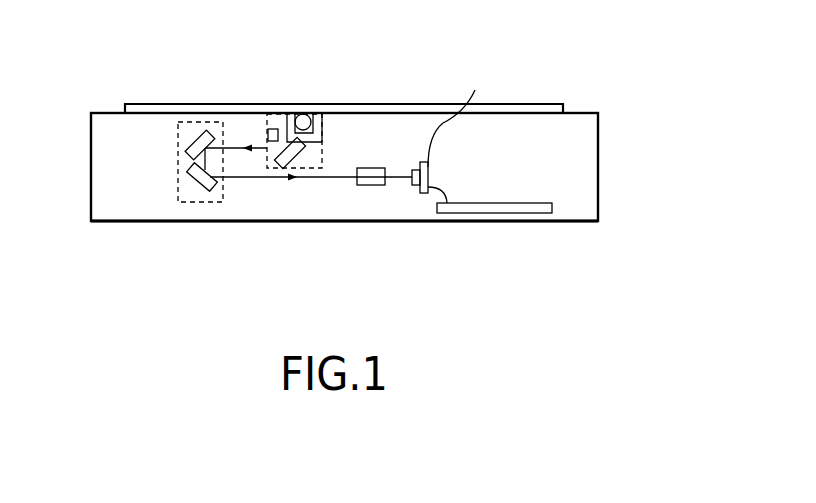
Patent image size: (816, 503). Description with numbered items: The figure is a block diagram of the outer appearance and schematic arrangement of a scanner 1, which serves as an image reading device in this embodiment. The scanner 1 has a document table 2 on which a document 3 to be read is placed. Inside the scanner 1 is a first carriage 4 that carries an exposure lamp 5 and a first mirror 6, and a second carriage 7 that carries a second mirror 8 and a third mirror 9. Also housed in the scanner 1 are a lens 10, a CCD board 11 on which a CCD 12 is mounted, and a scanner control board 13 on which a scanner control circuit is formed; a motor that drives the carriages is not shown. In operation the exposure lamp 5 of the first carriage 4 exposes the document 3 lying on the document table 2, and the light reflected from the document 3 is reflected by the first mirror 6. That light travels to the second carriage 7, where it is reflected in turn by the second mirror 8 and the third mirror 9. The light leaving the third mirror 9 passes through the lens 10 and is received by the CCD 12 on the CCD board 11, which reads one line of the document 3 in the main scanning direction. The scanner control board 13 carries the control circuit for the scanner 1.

The scanner 1 is at (361, 157).
The document table 2 is at (102, 112).
The document 3 is at (183, 105).
The first carriage 4 is at (273, 128).
The exposure lamp 5 is at (303, 114).
The first mirror 6 is at (307, 153).
The second carriage 7 is at (203, 202).
The second mirror 8 is at (192, 142).
The third mirror 9 is at (190, 175).
The lens 10 is at (362, 185).
The CCD board 11 is at (460, 113).
The CCD 12 is at (411, 188).
The scanner control board 13 is at (495, 213).